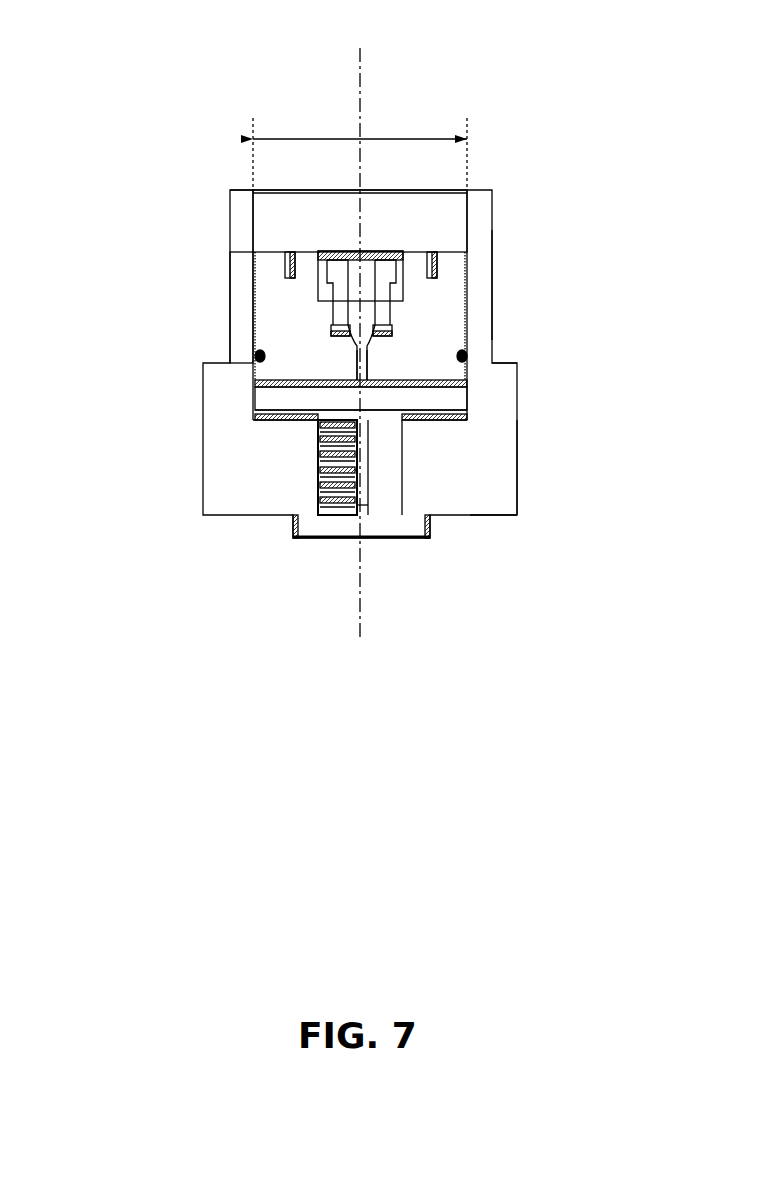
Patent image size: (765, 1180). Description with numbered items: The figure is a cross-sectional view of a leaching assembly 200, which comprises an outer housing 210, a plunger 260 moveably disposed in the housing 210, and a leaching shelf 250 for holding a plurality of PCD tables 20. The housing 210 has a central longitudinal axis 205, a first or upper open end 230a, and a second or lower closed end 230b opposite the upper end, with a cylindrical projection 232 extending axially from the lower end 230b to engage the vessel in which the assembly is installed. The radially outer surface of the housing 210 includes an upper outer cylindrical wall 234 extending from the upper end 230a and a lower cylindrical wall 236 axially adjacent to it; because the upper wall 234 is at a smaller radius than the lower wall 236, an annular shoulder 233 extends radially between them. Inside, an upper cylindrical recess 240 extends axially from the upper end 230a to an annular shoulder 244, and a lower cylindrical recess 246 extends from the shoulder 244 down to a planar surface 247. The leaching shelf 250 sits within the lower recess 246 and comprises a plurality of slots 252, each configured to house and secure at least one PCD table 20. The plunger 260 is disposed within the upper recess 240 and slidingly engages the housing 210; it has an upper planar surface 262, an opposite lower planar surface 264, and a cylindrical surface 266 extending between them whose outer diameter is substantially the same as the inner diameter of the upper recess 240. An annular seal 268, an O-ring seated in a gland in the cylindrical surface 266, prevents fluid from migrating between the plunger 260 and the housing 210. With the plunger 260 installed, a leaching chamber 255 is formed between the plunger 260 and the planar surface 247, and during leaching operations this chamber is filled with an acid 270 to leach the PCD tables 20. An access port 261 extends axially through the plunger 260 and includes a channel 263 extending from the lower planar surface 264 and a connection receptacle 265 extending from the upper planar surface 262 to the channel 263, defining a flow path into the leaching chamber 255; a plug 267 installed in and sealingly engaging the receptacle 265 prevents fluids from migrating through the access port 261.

The leaching assembly 200 is at (160, 60).
The central longitudinal axis 205 is at (358, 48).
The outer housing 210 is at (492, 207).
The upper open end 230a is at (235, 190).
The lower closed end 230b is at (505, 516).
The cylindrical projection 232 is at (418, 540).
The annular shoulder 233 is at (497, 363).
The upper outer cylindrical wall 234 is at (491, 290).
The lower cylindrical wall 236 is at (518, 475).
The upper cylindrical recess 240 is at (368, 213).
The annular shoulder 244 is at (258, 416).
The lower cylindrical recess 246 is at (315, 433).
The planar surface 247 is at (362, 507).
The leaching shelf 250 is at (327, 518).
The slots 252 is at (318, 445).
The leaching chamber 255 is at (262, 392).
The plunger 260 is at (253, 281).
The access port 261 is at (327, 326).
The upper planar surface 262 is at (267, 252).
The channel 263 is at (367, 369).
The lower planar surface 264 is at (450, 388).
The connection receptacle 265 is at (393, 335).
The cylindrical surface 266 is at (256, 309).
The plug 267 is at (338, 252).
The annular seal 268 is at (253, 353).
The acid 270 is at (427, 402).
The PCD tables 20 is at (357, 432).